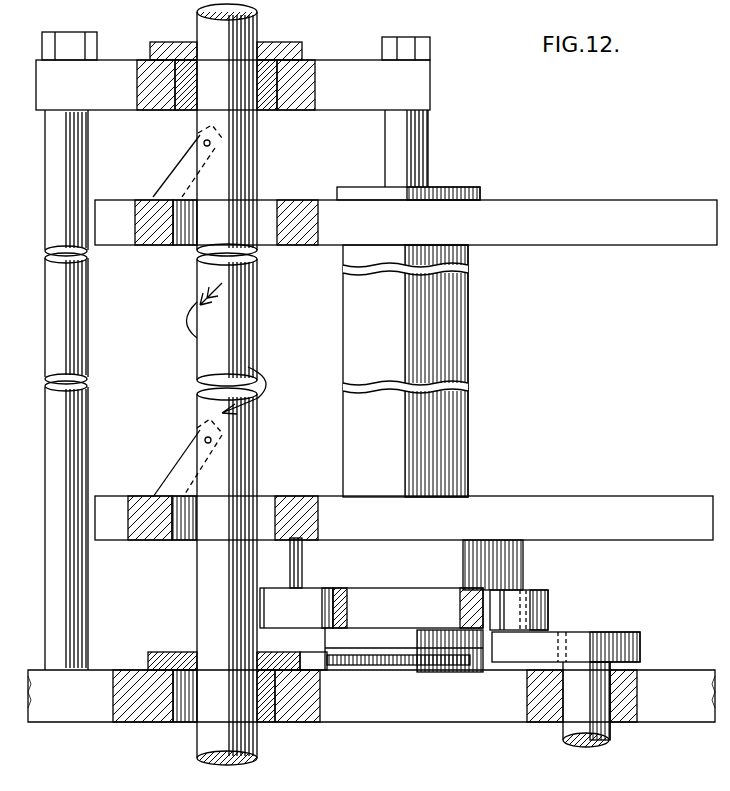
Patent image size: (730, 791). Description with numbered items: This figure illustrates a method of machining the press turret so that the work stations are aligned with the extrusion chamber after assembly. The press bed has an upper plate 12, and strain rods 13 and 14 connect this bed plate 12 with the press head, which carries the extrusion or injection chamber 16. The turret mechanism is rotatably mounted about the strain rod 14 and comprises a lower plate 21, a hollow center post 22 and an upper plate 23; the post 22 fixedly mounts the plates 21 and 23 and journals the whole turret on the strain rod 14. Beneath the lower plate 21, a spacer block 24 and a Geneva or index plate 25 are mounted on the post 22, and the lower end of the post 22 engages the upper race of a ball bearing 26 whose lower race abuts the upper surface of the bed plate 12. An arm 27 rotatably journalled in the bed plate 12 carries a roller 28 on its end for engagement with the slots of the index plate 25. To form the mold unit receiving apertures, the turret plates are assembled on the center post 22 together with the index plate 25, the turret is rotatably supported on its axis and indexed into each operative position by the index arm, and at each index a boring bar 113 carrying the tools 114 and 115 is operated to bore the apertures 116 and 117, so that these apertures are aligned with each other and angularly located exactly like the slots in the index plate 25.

The upper plate 12 is at (368, 711).
The strain rod 13 is at (51, 172).
The strain rod 14 is at (418, 165).
The extrusion or injection chamber 16 is at (0, 399).
The lower plate 21 is at (688, 512).
The hollow center post 22 is at (468, 342).
The upper plate 23 is at (667, 208).
The spacer block 24 is at (338, 576).
The Geneva plate 25 is at (548, 598).
The ball bearing 26 is at (447, 673).
The arm 27 is at (593, 630).
The roller 28 is at (510, 617).
The boring bar 113 is at (257, 318).
The tool 114 is at (180, 172).
The tool 115 is at (45, 88).
The aperture 116 is at (283, 200).
The aperture 117 is at (288, 497).